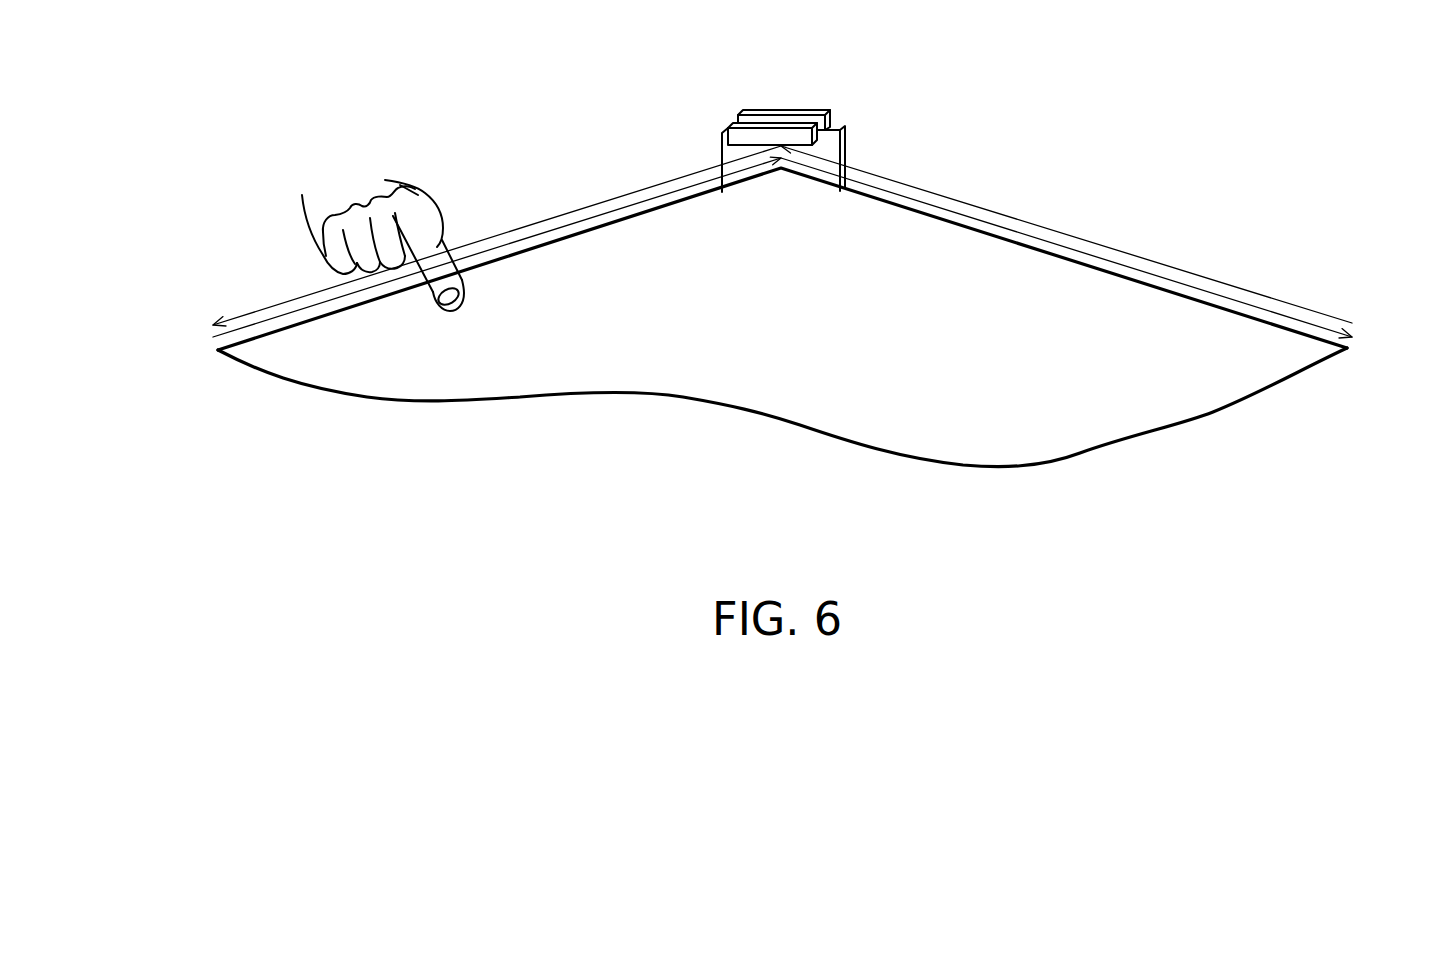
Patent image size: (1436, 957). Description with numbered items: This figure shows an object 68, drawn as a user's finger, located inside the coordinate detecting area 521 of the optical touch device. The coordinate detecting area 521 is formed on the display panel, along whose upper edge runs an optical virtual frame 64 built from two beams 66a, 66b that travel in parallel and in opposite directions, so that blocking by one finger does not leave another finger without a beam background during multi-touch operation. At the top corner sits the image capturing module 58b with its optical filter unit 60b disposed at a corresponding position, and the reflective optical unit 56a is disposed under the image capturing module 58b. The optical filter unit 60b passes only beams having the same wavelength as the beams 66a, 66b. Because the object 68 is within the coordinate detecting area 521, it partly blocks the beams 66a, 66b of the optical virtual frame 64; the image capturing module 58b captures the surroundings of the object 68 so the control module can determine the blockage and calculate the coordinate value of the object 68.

The coordinate detecting area 521 is at (763, 400).
The optical virtual frame 64 is at (782, 241).
The beam 66a is at (510, 232).
The beam 66b is at (553, 230).
The reflective optical unit 56a is at (838, 147).
The image capturing module 58b is at (805, 110).
The optical filter unit 60b is at (767, 133).
The object 68 is at (472, 293).